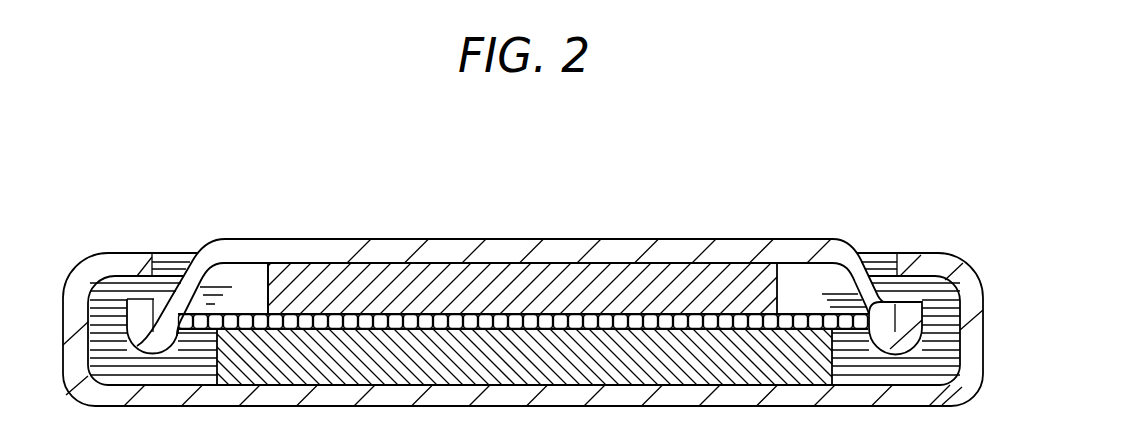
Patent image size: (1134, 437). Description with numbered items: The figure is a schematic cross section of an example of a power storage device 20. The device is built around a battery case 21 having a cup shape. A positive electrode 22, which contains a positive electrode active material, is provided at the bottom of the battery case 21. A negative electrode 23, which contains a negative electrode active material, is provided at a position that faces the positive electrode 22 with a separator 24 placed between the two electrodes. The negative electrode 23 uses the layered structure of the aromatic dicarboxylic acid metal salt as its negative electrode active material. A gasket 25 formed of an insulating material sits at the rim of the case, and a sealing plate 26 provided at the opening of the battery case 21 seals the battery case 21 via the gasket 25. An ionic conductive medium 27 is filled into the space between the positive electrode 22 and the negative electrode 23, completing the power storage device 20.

The power storage device 20 is at (803, 172).
The battery case 21 is at (82, 288).
The positive electrode 22 is at (508, 357).
The negative electrode 23 is at (330, 295).
The separator 24 is at (413, 318).
The gasket 25 is at (167, 271).
The sealing plate 26 is at (738, 257).
The ionic conductive medium 27 is at (245, 289).